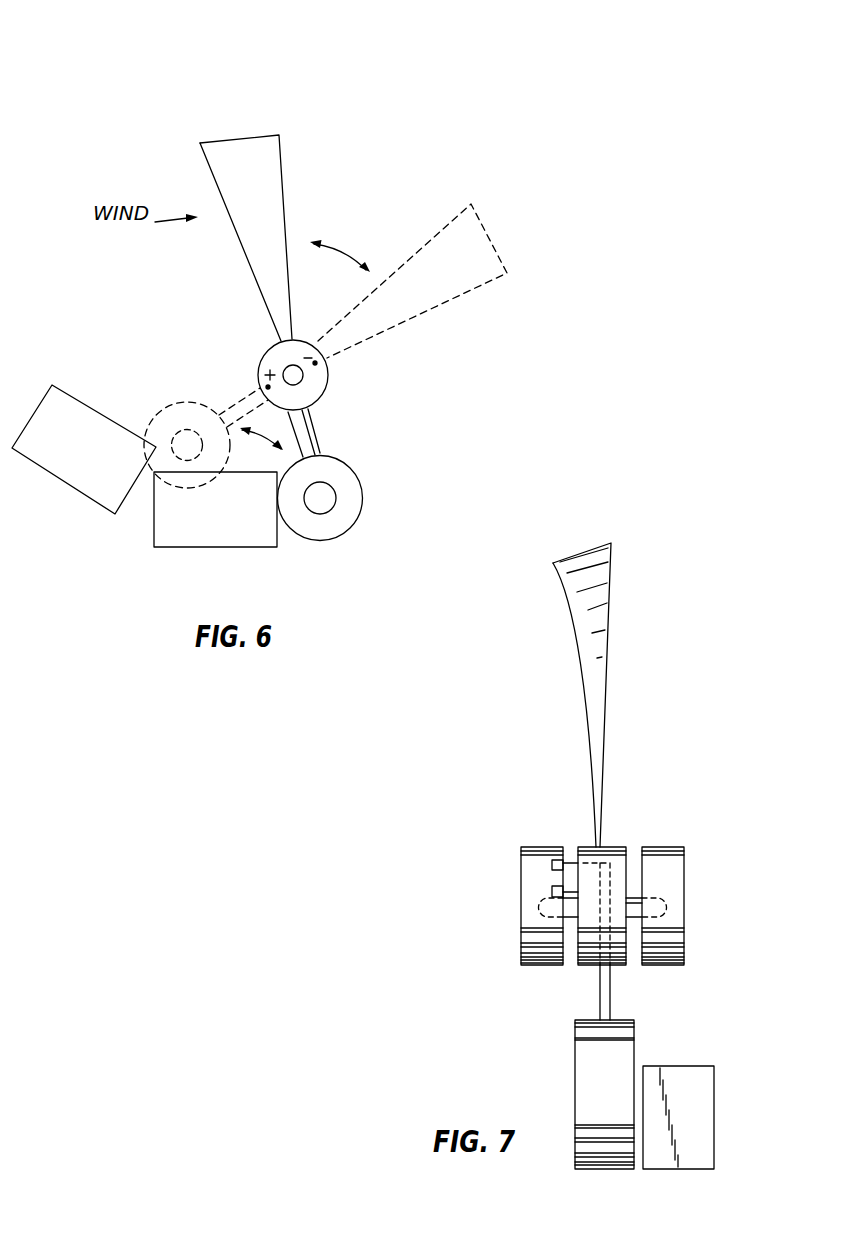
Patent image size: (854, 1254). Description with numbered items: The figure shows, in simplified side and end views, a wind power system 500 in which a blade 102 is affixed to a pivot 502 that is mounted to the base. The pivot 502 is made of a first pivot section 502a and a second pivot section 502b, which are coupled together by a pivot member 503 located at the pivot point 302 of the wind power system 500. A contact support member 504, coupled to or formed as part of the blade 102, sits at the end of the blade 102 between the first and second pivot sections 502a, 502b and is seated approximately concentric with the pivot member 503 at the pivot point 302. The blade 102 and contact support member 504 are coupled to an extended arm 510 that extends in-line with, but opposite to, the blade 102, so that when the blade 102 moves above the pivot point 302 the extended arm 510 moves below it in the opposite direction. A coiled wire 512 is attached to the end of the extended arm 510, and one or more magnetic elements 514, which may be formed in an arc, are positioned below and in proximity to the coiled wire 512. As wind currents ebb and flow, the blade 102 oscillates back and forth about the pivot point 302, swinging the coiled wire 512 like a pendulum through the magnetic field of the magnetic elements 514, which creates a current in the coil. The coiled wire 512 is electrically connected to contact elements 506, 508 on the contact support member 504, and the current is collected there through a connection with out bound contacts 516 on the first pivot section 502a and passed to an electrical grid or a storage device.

In FIG. 6, the wind power system 500 is at (342, 55).
In FIG. 6, the blade 102 is at (263, 167).
In FIG. 7, the blade 102 is at (610, 582).
In FIG. 6, the contact support member 504 is at (306, 340).
In FIG. 7, the contact support member 504 is at (613, 965).
In FIG. 6, the pivot point 302 is at (283, 364).
In FIG. 7, the pivot point 302 is at (660, 910).
In FIG. 6, the contact element 506 is at (266, 381).
In FIG. 7, the contact element 506 is at (600, 862).
In FIG. 6, the contact element 508 is at (316, 364).
In FIG. 7, the contact element 508 is at (597, 892).
In FIG. 6, the pivot 502 is at (221, 379).
In FIG. 7, the pivot 502 is at (499, 901).
In FIG. 7, the first pivot section 502a is at (543, 955).
In FIG. 7, the second pivot section 502b is at (672, 878).
In FIG. 7, the pivot member 503 is at (628, 903).
In FIG. 6, the extended arm 510 is at (312, 427).
In FIG. 7, the extended arm 510 is at (597, 993).
In FIG. 6, the coiled wire 512 is at (360, 474).
In FIG. 7, the coiled wire 512 is at (627, 1020).
In FIG. 6, the magnetic element 514 is at (233, 548).
In FIG. 7, the magnetic element 514 is at (703, 1065).
In FIG. 7, the out bound contacts 516 is at (552, 824).